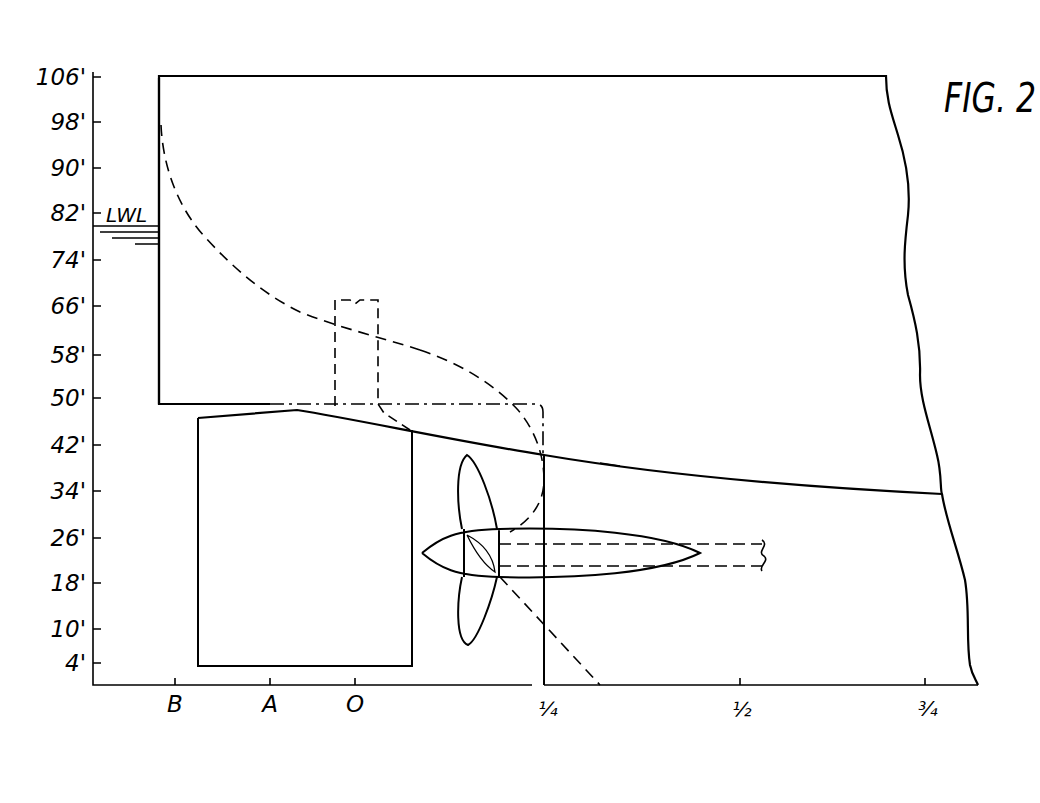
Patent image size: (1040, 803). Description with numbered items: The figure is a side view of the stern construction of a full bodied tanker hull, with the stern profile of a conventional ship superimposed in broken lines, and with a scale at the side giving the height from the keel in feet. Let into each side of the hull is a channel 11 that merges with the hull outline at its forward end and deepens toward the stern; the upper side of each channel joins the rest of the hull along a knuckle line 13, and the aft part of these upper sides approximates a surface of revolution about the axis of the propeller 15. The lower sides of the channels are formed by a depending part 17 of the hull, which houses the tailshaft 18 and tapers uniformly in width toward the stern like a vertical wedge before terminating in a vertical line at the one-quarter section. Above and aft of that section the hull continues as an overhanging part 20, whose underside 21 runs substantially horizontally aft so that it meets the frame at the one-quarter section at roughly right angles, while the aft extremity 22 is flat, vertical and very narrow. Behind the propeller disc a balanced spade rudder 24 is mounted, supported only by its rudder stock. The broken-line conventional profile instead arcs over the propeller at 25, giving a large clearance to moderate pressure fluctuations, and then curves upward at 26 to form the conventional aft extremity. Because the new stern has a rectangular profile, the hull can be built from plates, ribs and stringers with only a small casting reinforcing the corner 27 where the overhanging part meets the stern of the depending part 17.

The channel 11 is at (610, 452).
The knuckle line 13 is at (728, 472).
The propeller 15 is at (470, 615).
The depending part of the hull 17 is at (752, 635).
The tailshaft 18 is at (722, 548).
The overhanging part of the hull 20 is at (330, 233).
The underside of the overhanging part 21 is at (448, 406).
The aft extremity 22 is at (158, 330).
The rudder 24 is at (318, 553).
The curve over the propeller 25 is at (452, 360).
The upward curve of conventional stern 26 is at (250, 283).
The corner 27 is at (545, 407).